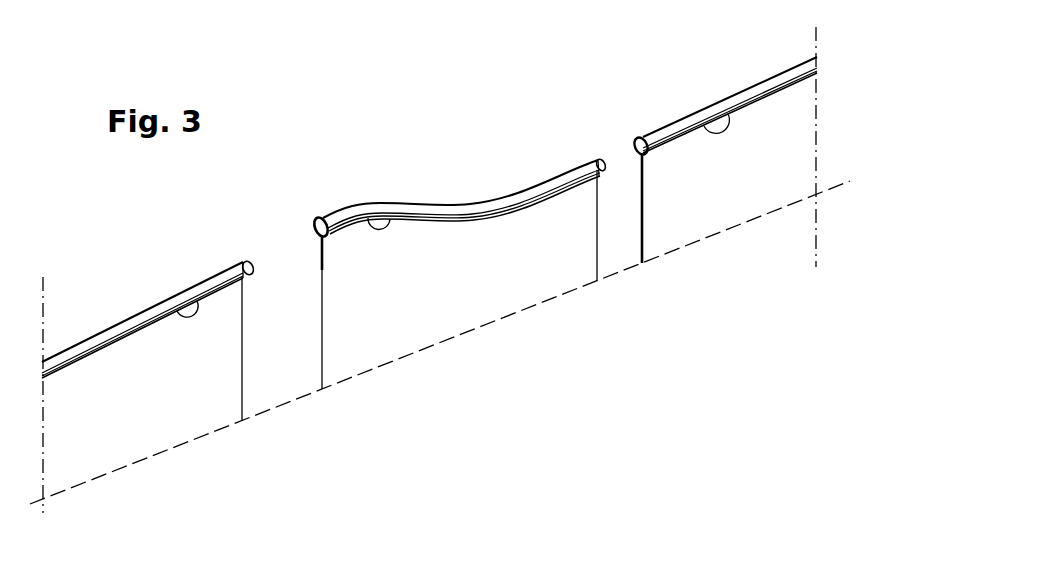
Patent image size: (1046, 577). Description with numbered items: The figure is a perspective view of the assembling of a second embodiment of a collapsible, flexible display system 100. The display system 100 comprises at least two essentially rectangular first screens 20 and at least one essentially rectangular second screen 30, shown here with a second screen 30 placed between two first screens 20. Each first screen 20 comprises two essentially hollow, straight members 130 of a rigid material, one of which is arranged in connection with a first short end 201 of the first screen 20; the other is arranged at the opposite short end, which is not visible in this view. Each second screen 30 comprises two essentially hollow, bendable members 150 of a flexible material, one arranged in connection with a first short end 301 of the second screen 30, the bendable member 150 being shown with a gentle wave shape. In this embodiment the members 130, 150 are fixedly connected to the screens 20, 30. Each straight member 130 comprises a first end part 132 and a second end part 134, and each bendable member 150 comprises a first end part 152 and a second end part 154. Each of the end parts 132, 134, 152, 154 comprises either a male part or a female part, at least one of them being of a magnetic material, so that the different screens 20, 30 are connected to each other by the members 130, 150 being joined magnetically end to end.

The first screen 20 is at (146, 409).
The second screen 30 is at (473, 287).
The collapsible, flexible display system 100 is at (383, 132).
The hollow, straight member 130 is at (120, 322).
The first end part 132 is at (645, 133).
The second end part 134 is at (238, 260).
The hollow, bendable member 150 is at (497, 196).
The first end part 152 is at (320, 218).
The second end part 154 is at (593, 158).
The first short end 201 is at (177, 313).
The first short end 301 is at (390, 213).